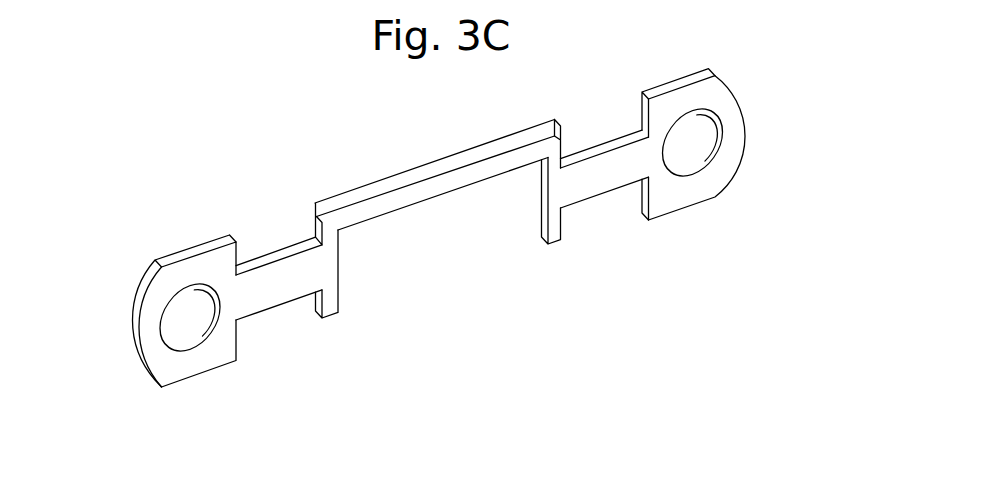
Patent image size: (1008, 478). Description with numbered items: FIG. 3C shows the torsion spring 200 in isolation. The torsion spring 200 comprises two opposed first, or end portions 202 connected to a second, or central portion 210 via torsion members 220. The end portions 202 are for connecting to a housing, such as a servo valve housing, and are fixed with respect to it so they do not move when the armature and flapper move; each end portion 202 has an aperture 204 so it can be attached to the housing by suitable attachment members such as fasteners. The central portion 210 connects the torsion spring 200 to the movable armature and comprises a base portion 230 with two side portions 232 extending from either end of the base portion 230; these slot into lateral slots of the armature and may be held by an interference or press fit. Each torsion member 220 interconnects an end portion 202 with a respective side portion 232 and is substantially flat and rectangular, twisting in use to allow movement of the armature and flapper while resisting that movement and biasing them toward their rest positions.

The torsion spring 200 is at (156, 126).
The end portion 202 is at (161, 362).
The aperture 204 is at (181, 301).
The central portion 210 is at (438, 162).
The torsion member 220 is at (277, 294).
The base portion 230 is at (407, 206).
The side portion 232 is at (338, 289).